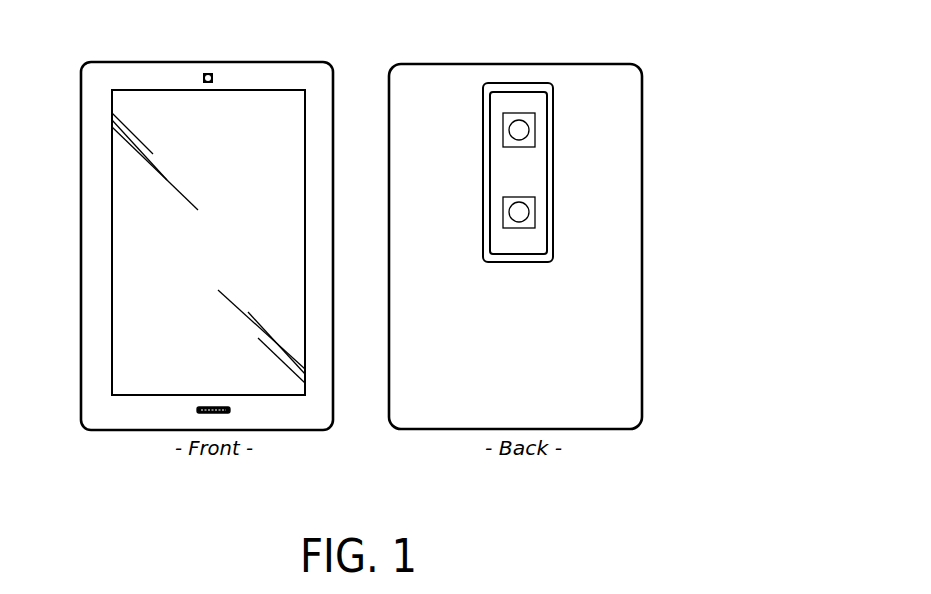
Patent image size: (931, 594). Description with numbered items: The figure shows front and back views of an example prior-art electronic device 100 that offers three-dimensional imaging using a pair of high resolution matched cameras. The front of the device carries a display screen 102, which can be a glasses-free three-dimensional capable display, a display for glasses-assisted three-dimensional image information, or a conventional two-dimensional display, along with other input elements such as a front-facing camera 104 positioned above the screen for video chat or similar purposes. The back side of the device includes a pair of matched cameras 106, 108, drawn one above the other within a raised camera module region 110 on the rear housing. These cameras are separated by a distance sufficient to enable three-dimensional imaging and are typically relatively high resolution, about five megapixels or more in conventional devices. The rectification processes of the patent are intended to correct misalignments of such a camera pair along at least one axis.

The electronic device 100 is at (757, 106).
The display screen 102 is at (112, 98).
The front-facing camera 104 is at (207, 72).
The matched camera 106 is at (537, 135).
The matched camera 108 is at (537, 217).
The rear camera module 110 is at (487, 165).